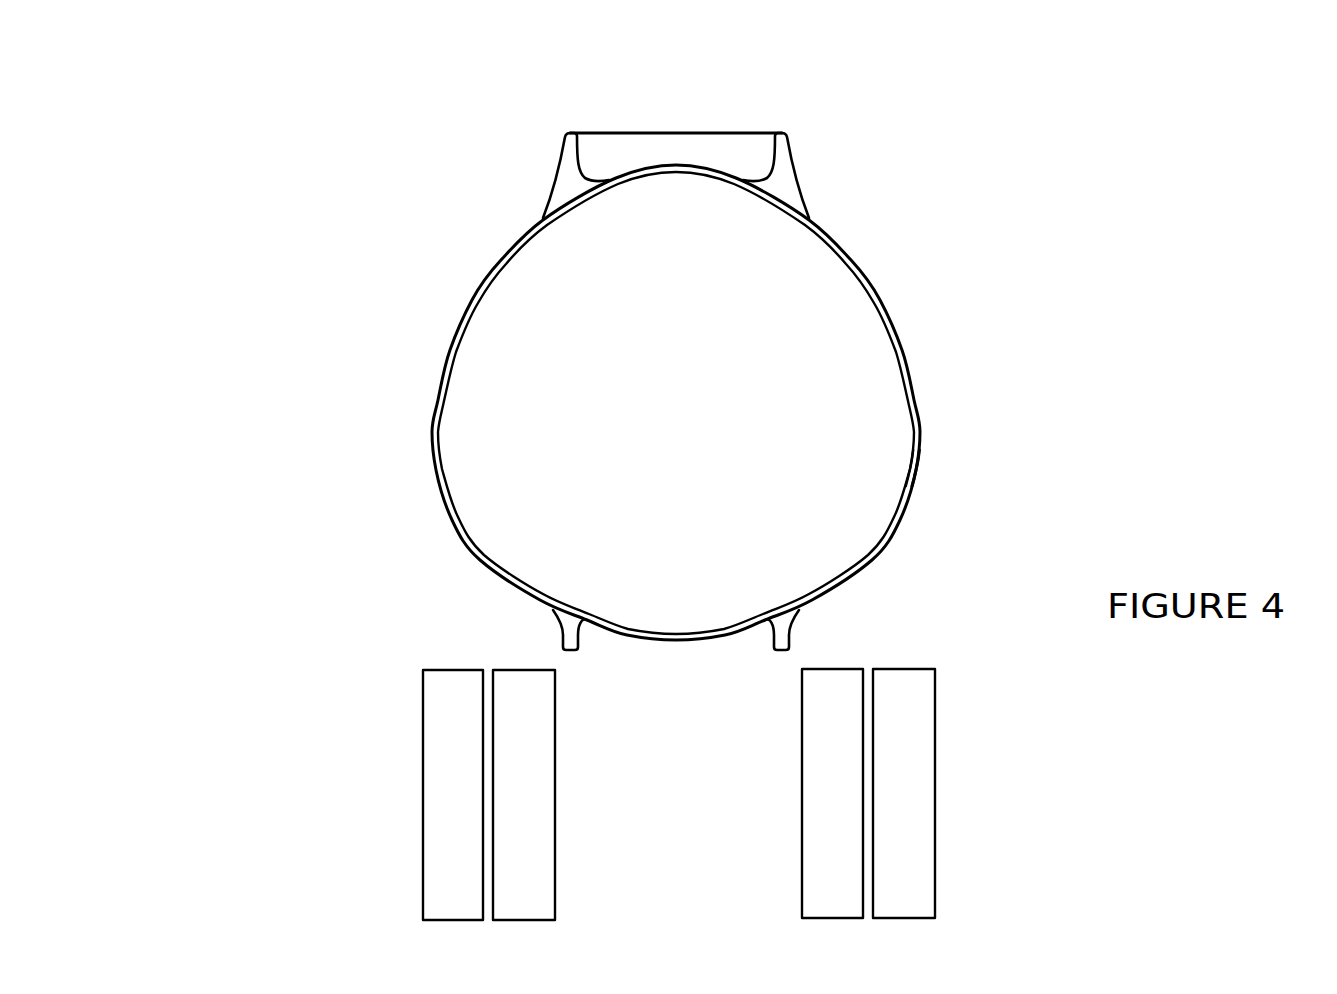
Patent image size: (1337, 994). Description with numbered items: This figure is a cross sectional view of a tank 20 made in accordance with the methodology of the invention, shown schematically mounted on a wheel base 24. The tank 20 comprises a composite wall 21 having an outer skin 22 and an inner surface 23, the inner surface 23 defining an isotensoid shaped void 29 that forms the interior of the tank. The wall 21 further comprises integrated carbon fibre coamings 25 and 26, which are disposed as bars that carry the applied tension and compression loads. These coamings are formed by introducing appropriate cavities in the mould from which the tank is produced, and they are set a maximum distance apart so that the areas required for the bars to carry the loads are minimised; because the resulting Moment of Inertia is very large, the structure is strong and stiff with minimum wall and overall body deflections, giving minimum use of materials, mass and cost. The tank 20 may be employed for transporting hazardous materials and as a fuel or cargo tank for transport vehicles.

The tank 20 is at (622, 336).
The composite wall 21 is at (450, 522).
The outer skin 22 is at (384, 416).
The inner surface 23 is at (903, 462).
The wheel base 24 is at (935, 726).
The coaming 25 is at (788, 127).
The coaming 26 is at (571, 130).
The isotensoid shaped void 29 is at (837, 400).